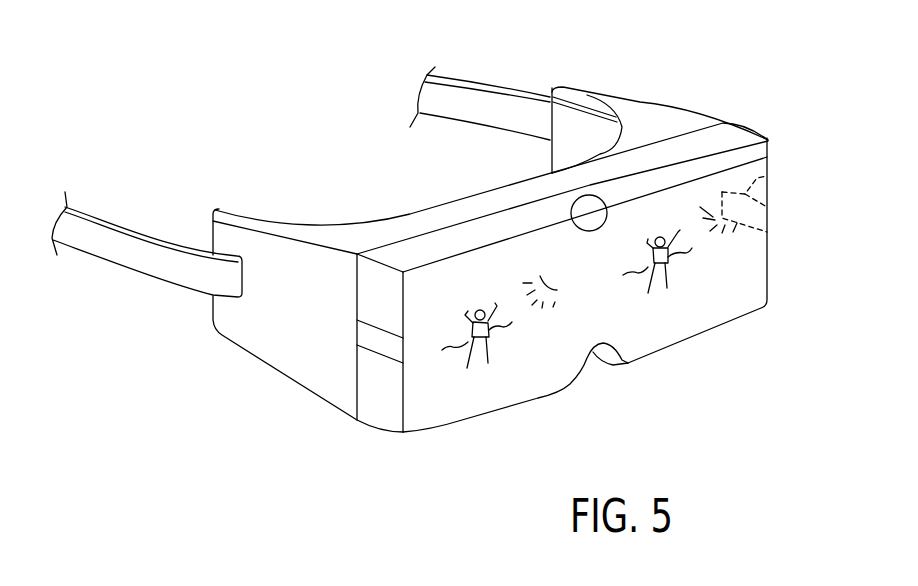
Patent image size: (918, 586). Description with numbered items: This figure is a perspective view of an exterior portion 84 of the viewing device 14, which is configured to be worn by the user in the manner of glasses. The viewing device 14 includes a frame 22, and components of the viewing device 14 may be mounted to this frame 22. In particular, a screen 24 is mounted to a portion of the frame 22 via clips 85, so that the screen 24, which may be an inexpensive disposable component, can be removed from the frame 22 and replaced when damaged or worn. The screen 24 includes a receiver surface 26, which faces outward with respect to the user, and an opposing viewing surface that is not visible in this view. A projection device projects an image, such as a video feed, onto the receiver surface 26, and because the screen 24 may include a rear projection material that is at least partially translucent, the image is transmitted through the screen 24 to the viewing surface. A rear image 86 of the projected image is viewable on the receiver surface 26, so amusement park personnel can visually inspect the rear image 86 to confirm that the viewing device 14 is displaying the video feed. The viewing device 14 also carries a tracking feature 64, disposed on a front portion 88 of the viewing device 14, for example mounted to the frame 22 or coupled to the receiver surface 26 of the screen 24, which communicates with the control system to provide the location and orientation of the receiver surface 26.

The viewing device 14 is at (340, 191).
The frame 22 is at (490, 85).
The screen 24 is at (353, 445).
The receiver surface 26 is at (446, 393).
The tracking feature 64 is at (588, 210).
The exterior portion 84 is at (708, 377).
The clips 85 is at (372, 338).
The rear image 86 is at (508, 360).
The front portion 88 is at (725, 345).